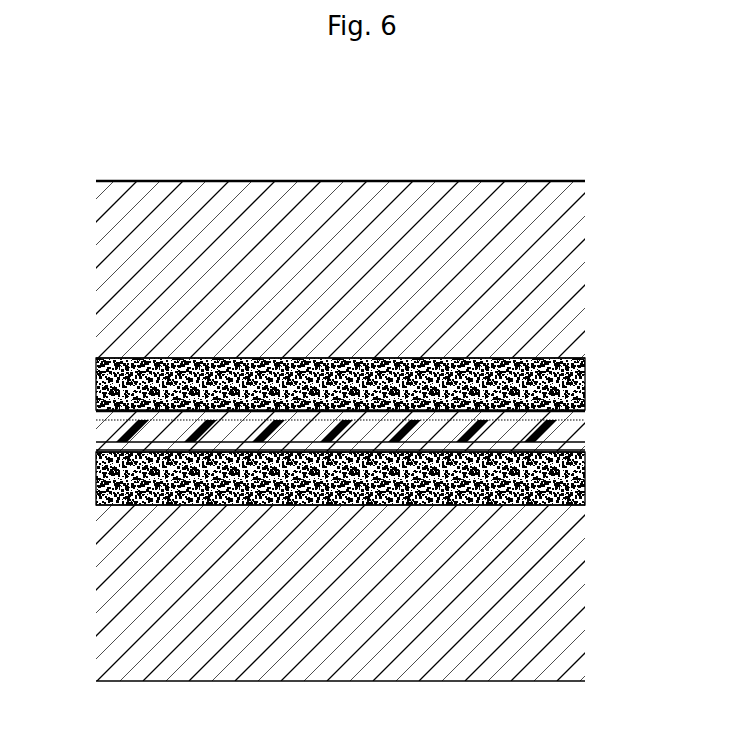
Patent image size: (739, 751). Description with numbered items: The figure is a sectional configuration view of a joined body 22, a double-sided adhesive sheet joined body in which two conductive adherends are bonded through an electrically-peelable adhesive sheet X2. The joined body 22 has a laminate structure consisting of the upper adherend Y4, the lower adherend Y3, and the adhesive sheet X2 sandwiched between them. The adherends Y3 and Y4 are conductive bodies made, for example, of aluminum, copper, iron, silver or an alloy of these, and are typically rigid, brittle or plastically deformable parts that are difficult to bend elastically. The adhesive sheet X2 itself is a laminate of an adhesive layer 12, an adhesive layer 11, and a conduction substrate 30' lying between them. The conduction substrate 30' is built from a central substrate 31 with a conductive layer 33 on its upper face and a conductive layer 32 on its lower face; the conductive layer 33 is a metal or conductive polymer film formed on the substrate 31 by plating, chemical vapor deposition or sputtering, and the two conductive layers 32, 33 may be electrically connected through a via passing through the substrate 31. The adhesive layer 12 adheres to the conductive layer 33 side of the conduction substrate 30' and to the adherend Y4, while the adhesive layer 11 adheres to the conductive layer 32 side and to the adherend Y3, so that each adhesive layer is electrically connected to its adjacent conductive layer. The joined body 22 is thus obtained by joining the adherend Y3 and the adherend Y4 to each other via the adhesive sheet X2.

The joined body 22 is at (369, 388).
The adherend Y4 is at (113, 290).
The adhesive sheet X2 is at (369, 431).
The adhesive layer 12 is at (585, 373).
The conduction substrate 30' is at (369, 431).
The conductive layer 33 is at (585, 413).
The substrate 31 is at (585, 440).
The conductive layer 32 is at (372, 454).
The adhesive layer 11 is at (585, 475).
The adherend Y3 is at (110, 582).